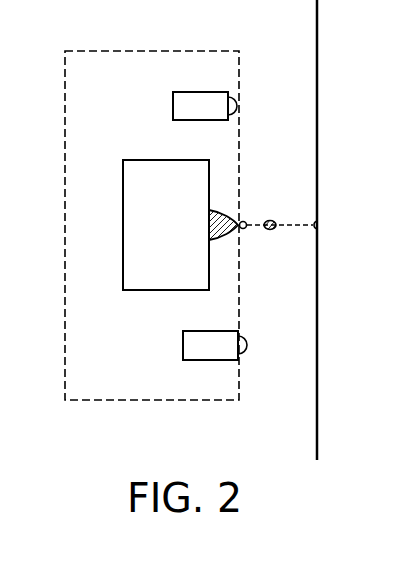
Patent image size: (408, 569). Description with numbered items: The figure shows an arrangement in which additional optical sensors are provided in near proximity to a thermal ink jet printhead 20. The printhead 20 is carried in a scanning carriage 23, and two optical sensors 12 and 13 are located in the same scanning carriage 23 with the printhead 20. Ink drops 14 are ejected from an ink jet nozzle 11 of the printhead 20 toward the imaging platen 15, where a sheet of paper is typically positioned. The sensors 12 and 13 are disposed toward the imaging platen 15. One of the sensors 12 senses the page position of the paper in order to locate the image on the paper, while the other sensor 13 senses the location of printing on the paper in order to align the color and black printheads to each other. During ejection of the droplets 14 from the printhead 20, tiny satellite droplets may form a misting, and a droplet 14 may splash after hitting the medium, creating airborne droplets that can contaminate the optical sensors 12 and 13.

The ink jet nozzle 11 is at (226, 210).
The optical sensor 12 is at (173, 104).
The optical sensor 13 is at (183, 343).
The ink drop 14 is at (272, 231).
The imaging platen 15 is at (319, 178).
The printhead 20 is at (123, 218).
The scanning carriage 23 is at (65, 111).